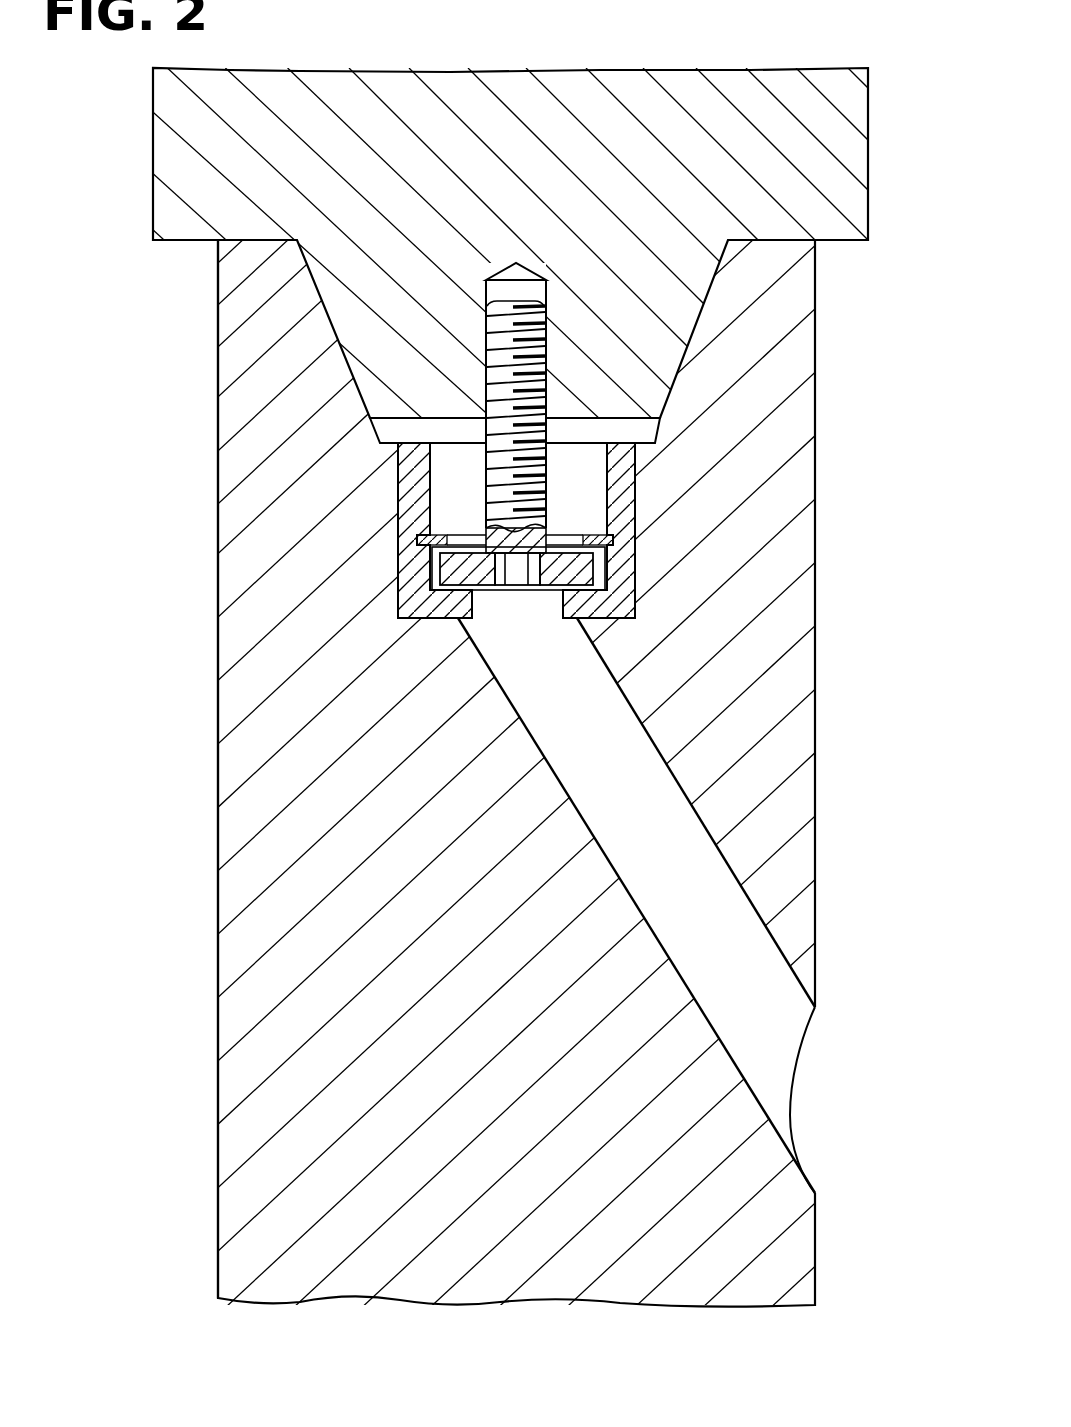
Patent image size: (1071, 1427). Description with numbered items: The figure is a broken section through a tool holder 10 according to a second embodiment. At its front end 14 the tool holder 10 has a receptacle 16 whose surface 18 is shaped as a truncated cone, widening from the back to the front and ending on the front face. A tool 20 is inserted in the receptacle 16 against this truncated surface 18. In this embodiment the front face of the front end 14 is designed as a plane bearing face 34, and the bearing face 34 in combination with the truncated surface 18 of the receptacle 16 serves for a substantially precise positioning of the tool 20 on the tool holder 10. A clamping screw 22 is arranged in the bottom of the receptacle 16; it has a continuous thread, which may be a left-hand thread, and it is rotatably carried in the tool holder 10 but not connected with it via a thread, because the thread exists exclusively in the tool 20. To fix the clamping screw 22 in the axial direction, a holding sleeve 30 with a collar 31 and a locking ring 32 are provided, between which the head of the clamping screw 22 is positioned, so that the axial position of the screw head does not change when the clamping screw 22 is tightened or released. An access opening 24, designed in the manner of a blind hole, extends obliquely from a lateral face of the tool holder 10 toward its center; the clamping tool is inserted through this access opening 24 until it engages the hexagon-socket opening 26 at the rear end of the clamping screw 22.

The tool holder 10 is at (829, 796).
The front end 14 is at (232, 321).
The receptacle 16 is at (636, 434).
The truncated surface 18 is at (679, 338).
The tool 20 is at (643, 92).
The clamping screw 22 is at (493, 511).
The access opening 24 is at (777, 952).
The opening 26 is at (520, 578).
The holding sleeve 30 is at (620, 563).
The collar 31 is at (443, 607).
The locking ring 32 is at (618, 541).
The bearing face 34 is at (802, 236).